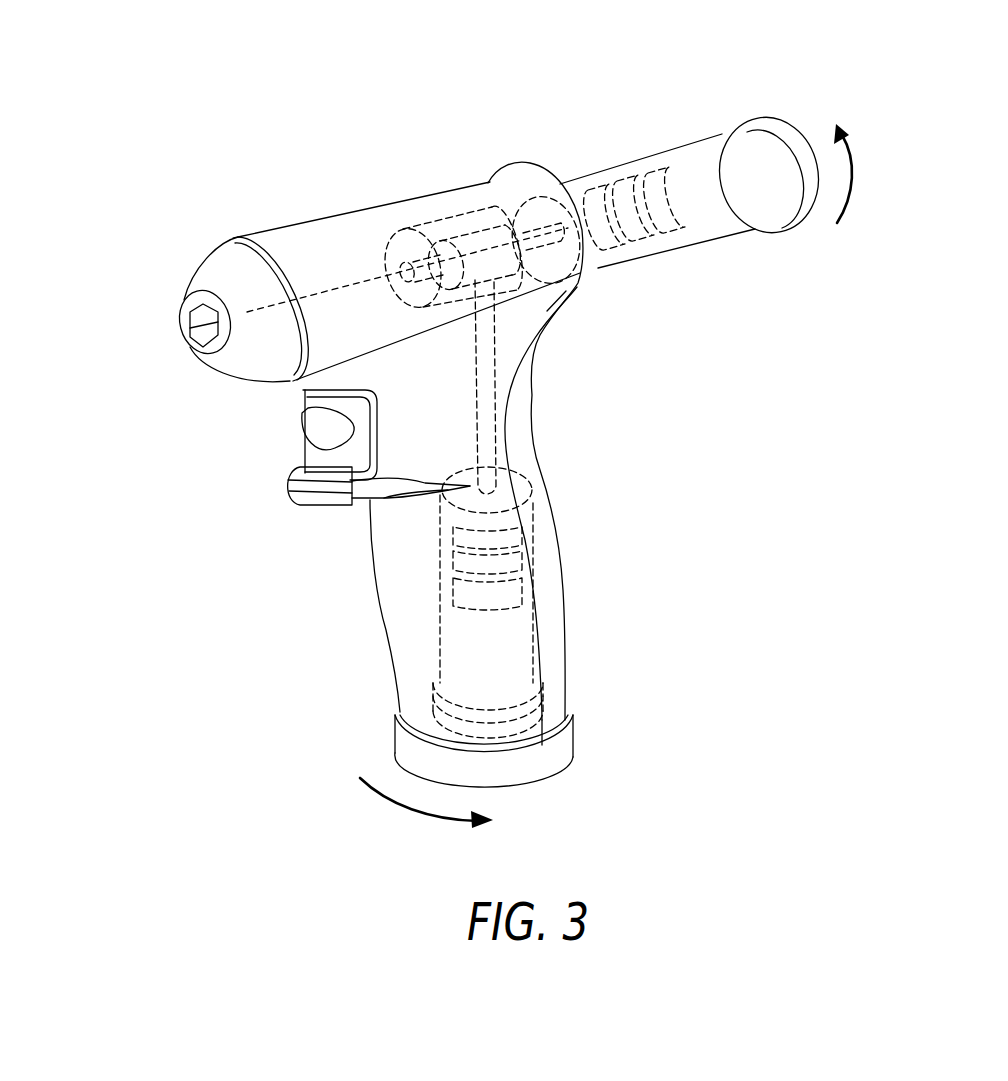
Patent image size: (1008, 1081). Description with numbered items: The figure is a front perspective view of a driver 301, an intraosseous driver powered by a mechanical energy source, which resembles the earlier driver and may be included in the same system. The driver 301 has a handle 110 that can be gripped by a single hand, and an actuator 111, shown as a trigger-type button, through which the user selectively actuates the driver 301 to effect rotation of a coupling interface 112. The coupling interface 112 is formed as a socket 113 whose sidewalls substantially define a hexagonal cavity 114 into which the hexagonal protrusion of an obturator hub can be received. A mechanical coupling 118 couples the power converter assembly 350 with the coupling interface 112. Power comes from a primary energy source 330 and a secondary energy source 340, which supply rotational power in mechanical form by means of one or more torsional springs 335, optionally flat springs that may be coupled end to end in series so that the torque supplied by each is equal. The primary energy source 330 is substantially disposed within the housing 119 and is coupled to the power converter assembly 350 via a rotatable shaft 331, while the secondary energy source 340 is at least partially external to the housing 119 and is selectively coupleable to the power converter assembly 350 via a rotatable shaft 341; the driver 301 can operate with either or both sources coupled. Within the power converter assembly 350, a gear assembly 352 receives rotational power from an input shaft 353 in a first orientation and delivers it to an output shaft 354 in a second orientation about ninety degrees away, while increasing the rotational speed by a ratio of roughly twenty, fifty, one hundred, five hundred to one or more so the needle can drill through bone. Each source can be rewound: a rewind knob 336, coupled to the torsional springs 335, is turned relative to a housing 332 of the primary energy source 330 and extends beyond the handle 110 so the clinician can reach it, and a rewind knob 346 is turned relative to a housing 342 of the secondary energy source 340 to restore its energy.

The driver 301 is at (212, 108).
The handle 110 is at (398, 597).
The actuator 111 is at (327, 430).
The coupling interface 112 is at (187, 350).
The socket 113 is at (210, 348).
The cavity 114 is at (185, 320).
The mechanical coupling 118 is at (330, 290).
The housing 119 is at (402, 673).
The primary energy source 330 is at (533, 498).
The rotatable shaft 331 is at (493, 368).
The housing of the primary energy source 332 is at (556, 629).
The torsional springs 335 is at (513, 535).
The rewind knob 336 is at (557, 755).
The secondary energy source 340 is at (700, 160).
The rotatable shaft 341 is at (530, 230).
The housing of the secondary energy source 342 is at (728, 233).
The rewind knob 346 is at (780, 132).
The power converter assembly 350 is at (430, 228).
The gear assembly 352 is at (467, 228).
The input shaft 353 is at (510, 228).
The output shaft 354 is at (420, 259).